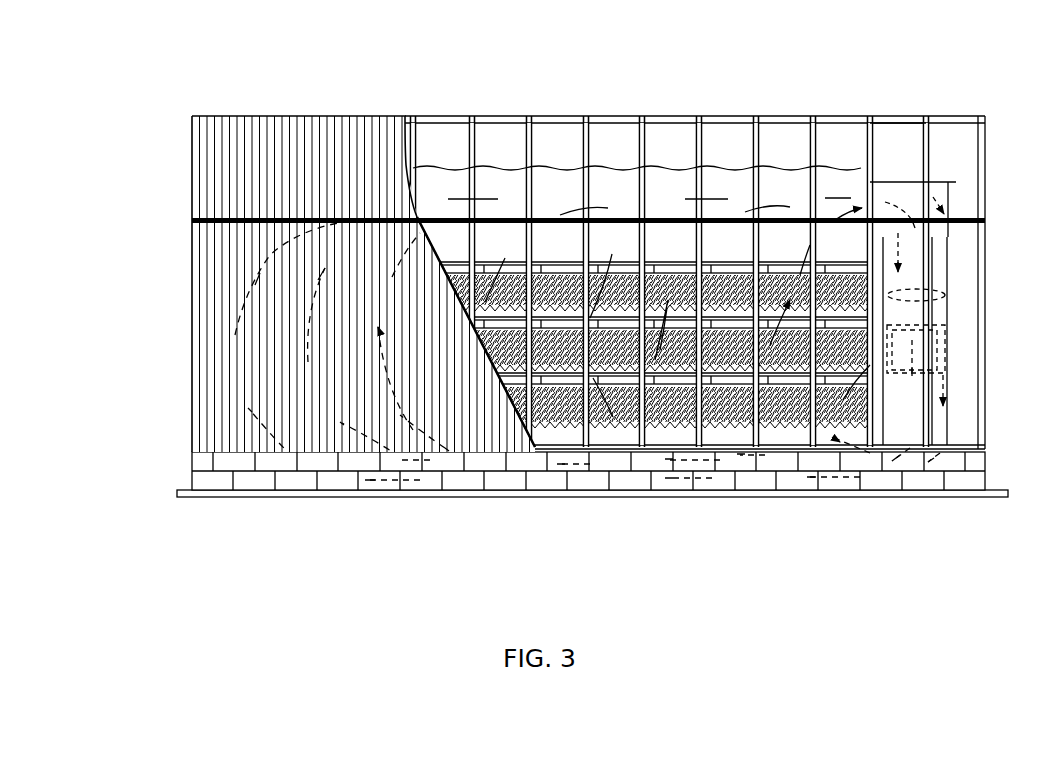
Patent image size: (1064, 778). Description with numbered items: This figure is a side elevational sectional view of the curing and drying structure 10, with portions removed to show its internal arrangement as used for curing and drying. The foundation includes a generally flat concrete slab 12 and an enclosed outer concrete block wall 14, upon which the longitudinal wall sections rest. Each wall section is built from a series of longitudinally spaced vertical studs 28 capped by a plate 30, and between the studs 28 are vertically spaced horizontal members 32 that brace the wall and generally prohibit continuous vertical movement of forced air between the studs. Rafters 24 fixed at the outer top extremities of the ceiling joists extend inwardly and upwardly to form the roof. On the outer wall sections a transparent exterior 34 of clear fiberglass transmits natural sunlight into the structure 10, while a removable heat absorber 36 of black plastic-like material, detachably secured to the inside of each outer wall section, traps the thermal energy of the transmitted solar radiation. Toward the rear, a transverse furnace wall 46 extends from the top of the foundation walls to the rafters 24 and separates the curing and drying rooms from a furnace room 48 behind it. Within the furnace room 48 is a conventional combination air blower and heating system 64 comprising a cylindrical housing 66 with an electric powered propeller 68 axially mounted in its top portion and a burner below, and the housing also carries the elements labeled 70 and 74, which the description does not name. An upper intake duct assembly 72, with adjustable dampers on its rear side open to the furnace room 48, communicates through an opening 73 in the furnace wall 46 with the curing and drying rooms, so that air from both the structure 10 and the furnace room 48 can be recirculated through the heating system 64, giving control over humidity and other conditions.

The curing and drying structure 10 is at (262, 88).
The concrete slab 12 is at (190, 496).
The outer concrete block wall 14 is at (270, 480).
The rafter 24 is at (580, 135).
The vertical studs 28 is at (635, 425).
The plate 30 is at (620, 220).
The horizontal members 32 is at (508, 387).
The transparent exterior 34 is at (212, 153).
The heat absorber 36 is at (718, 165).
The furnace wall 46 is at (887, 132).
The furnace room 48 is at (941, 164).
The combination air blower and heating system 64 is at (956, 297).
The cylindrical housing 66 is at (950, 333).
The electric powered propeller 68 is at (893, 300).
The heater 70 is at (935, 352).
The upper intake duct assembly 72 is at (950, 205).
The opening 73 is at (875, 186).
The duct outlet wall 74 is at (950, 418).